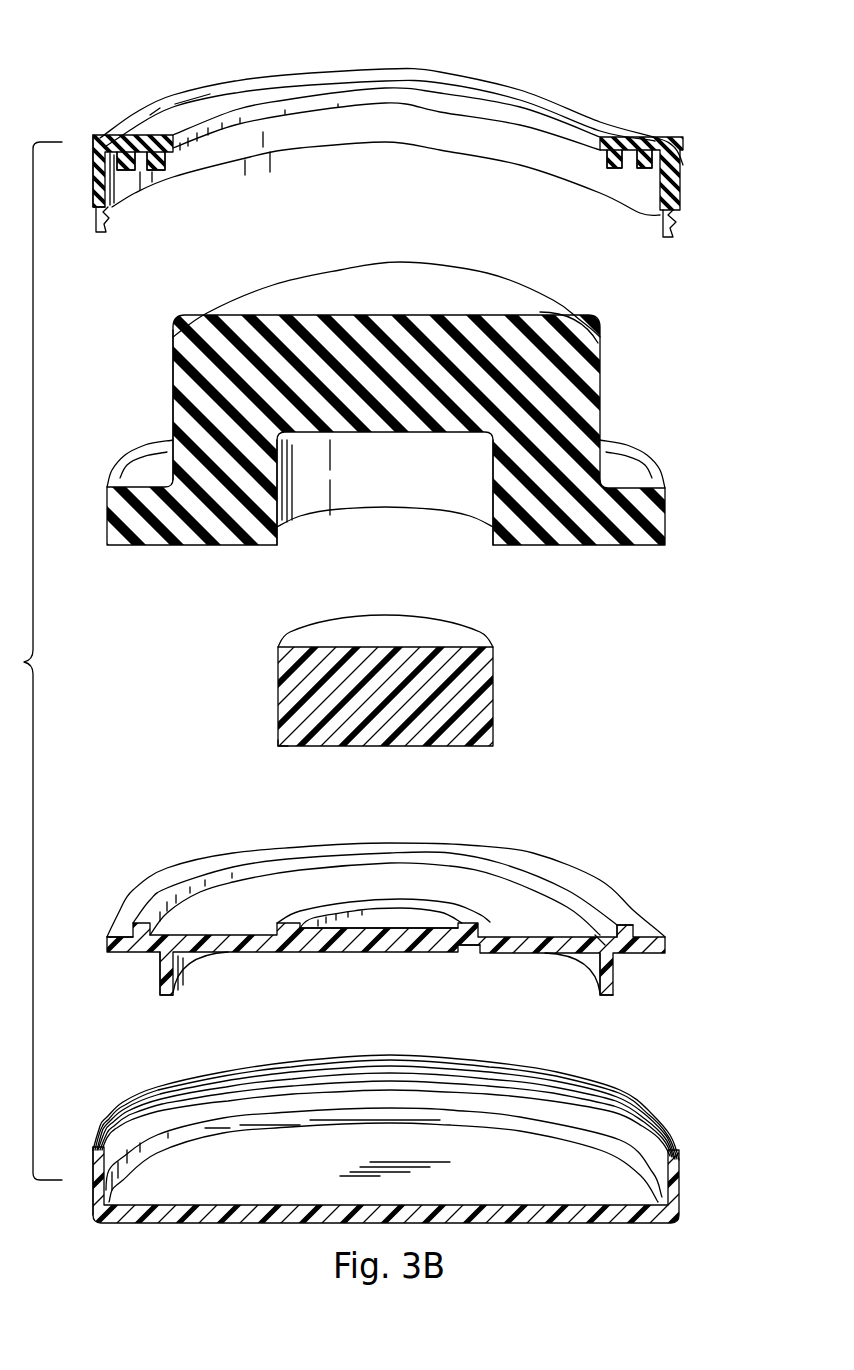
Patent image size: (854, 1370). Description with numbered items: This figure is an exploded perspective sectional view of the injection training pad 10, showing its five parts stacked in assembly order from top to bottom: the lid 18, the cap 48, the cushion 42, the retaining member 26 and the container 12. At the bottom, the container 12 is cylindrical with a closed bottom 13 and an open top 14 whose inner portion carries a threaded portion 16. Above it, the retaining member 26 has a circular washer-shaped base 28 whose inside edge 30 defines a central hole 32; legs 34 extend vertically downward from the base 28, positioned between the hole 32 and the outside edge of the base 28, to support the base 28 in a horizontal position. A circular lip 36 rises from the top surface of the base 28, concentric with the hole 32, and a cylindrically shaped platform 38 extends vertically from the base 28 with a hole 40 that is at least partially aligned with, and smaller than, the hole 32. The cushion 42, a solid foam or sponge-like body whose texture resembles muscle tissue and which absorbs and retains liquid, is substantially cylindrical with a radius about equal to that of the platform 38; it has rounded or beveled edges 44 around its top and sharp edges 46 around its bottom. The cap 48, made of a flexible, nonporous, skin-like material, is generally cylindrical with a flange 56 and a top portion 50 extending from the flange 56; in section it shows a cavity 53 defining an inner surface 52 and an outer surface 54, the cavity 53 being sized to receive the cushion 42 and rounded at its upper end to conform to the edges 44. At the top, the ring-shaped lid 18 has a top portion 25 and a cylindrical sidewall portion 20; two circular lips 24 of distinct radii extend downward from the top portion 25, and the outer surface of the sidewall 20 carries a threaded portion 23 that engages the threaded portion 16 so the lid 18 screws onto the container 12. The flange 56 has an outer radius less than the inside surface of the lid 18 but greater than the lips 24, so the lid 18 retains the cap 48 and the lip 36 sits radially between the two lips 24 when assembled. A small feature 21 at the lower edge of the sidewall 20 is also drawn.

The injection training pad 10 is at (118, 84).
The container 12 is at (381, 1167).
The closed bottom 13 is at (626, 1226).
The open top 14 is at (137, 1098).
The threaded portion 16 is at (92, 1178).
The lid 18 is at (400, 159).
The sidewall portion 20 is at (94, 168).
The ring lip 21 is at (101, 236).
The threaded portion 23 is at (676, 222).
The circular lips 24 is at (612, 172).
The top portion 25 is at (587, 105).
The retaining member 26 is at (388, 912).
The base 28 is at (106, 943).
The inside edge 30 is at (472, 944).
The hole 32 is at (388, 936).
The legs 34 is at (158, 972).
The circular lip 36 is at (612, 898).
The platform 38 is at (300, 905).
The hole 40 is at (445, 918).
The cushion 42 is at (380, 695).
The rounded or beveled edges 44 is at (283, 648).
The sharp edges 46 is at (278, 740).
The cap 48 is at (427, 419).
The top portion 50 is at (212, 312).
The inner surface 52 is at (428, 438).
The cavity 53 is at (280, 504).
The outer surface 54 is at (168, 372).
The flange 56 is at (108, 512).